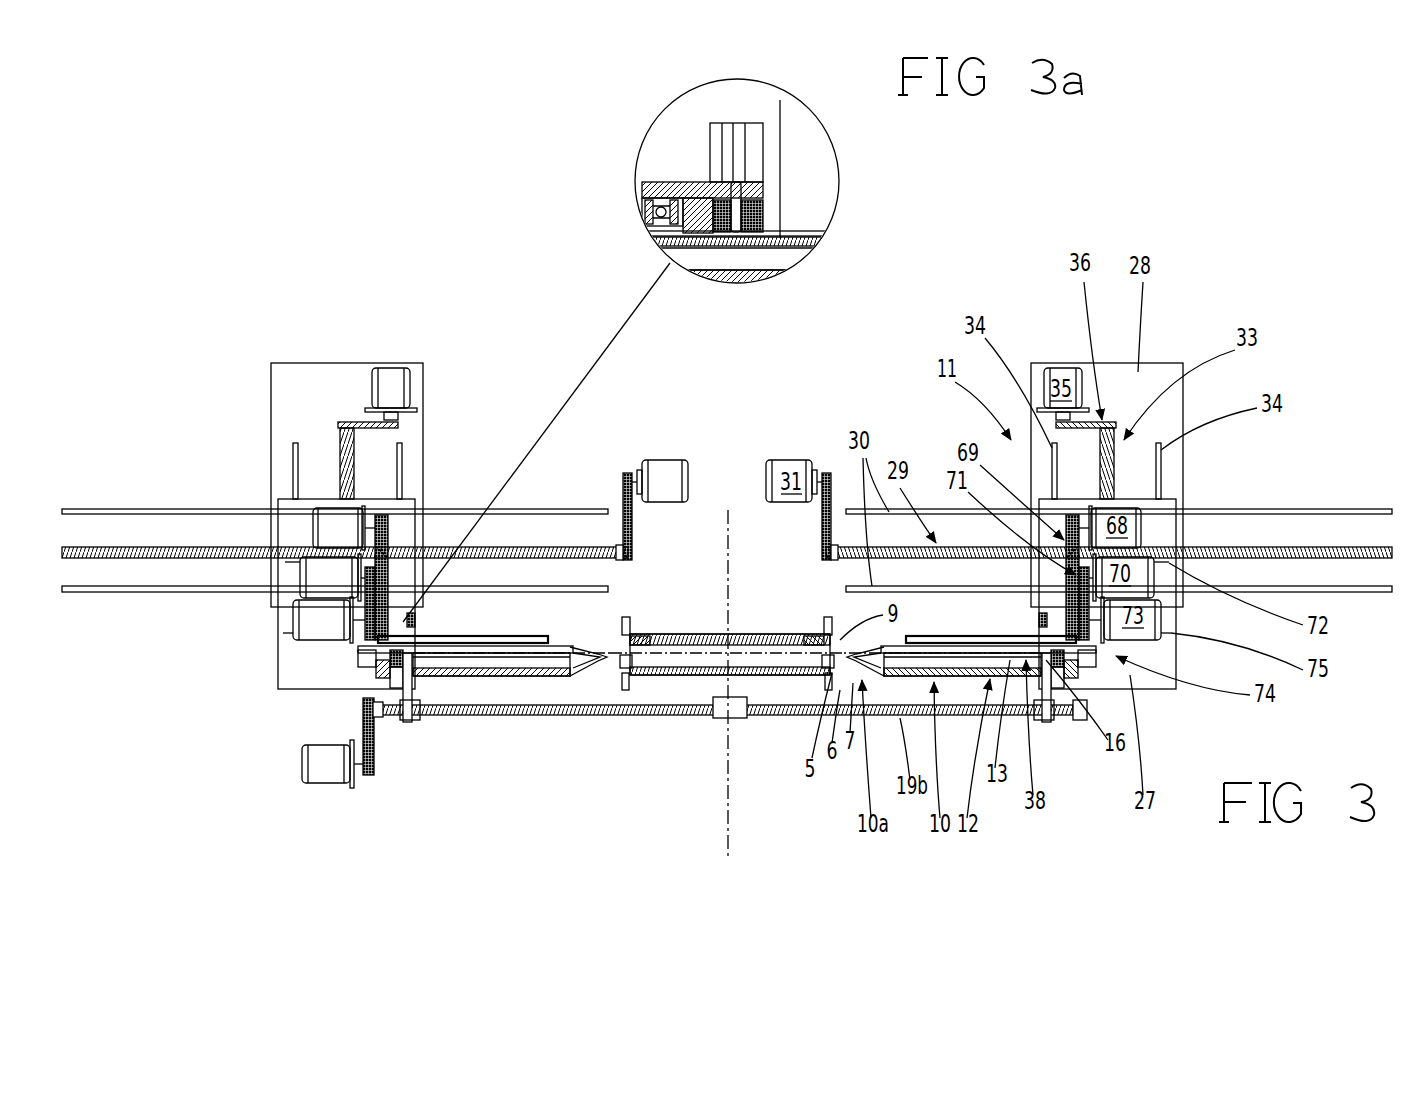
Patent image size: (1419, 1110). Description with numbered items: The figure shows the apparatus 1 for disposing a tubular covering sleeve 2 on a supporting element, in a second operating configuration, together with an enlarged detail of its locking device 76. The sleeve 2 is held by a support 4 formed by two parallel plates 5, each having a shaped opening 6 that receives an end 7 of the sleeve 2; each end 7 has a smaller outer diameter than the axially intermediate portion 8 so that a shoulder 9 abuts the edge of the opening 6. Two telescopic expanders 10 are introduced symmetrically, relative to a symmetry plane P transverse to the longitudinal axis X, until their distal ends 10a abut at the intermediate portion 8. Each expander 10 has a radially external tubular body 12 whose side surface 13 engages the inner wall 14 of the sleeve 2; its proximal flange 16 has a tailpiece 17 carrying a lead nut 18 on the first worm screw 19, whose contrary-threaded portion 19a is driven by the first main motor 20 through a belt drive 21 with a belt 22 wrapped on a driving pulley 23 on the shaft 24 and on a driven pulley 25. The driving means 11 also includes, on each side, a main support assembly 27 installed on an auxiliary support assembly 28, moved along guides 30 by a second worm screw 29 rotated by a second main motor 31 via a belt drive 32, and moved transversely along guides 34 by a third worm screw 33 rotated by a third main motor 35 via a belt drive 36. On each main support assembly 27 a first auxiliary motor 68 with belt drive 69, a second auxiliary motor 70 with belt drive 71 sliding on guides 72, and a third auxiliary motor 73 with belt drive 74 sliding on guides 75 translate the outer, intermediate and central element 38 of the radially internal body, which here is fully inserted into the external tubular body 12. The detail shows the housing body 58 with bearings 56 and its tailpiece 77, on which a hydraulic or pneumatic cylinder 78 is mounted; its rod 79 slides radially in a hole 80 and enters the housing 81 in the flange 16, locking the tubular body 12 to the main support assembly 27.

In FIG. 3, the apparatus 1 is at (864, 352).
In FIG. 3, the tubular covering sleeve 2 is at (760, 630).
In FIG. 3, the support 4 is at (642, 618).
In FIG. 3, the plates 5 is at (641, 674).
In FIG. 3, the shaped opening 6 is at (626, 674).
In FIG. 3, the end of sleeve 7 is at (620, 656).
In FIG. 3, the axially intermediate portion 8 is at (780, 675).
In FIG. 3, the shoulder 9 is at (620, 640).
In FIG. 3, the expanders 10 is at (522, 682).
In FIG. 3, the distal ends of expanders 10a is at (592, 680).
In FIG. 3, the driving means 11 is at (443, 440).
In FIG. 3, the radially external tubular body 12 is at (464, 679).
In FIG. 3, the side surface 13 is at (488, 660).
In FIG. 3, the inner wall 14 is at (747, 655).
In FIG. 3, the flange 16 is at (412, 660).
In FIG. 3A, the flange 16 is at (765, 218).
In FIG. 3, the tailpiece 17 is at (395, 690).
In FIG. 3, the lead nut 18 is at (409, 724).
In FIG. 3, the first worm screw 19 is at (662, 720).
In FIG. 3, the first portion of first worm screw 19a is at (683, 718).
In FIG. 3, the first main motor 20 is at (316, 776).
In FIG. 3, the belt drive 21 is at (352, 730).
In FIG. 3, the belt 22 is at (375, 745).
In FIG. 3, the driving pulley 23 is at (368, 776).
In FIG. 3, the shaft 24 is at (357, 782).
In FIG. 3, the driven pulley 25 is at (360, 705).
In FIG. 3, the main support assembly 27 is at (288, 512).
In FIG. 3, the auxiliary support assembly 28 is at (316, 372).
In FIG. 3, the second worm screw 29 is at (518, 543).
In FIG. 3, the parallel guides 30 is at (582, 586).
In FIG. 3, the second main motor 31 is at (676, 494).
In FIG. 3, the belt drive 32 is at (816, 524).
In FIG. 3, the third worm screw 33 is at (330, 440).
In FIG. 3, the guides 34 is at (293, 450).
In FIG. 3, the third main motor 35 is at (380, 401).
In FIG. 3, the belt drive 36 is at (352, 420).
In FIG. 3, the central element 38 is at (553, 660).
In FIG. 3A, the bearings 56 is at (645, 226).
In FIG. 3A, the housing body 58 is at (655, 177).
In FIG. 3, the first auxiliary motor 68 is at (327, 538).
In FIG. 3, the belt drive 69 is at (390, 540).
In FIG. 3, the second auxiliary motor 70 is at (324, 586).
In FIG. 3, the belt drive 71 is at (378, 575).
In FIG. 3, the guides 72 is at (285, 563).
In FIG. 3, the third auxiliary motor 73 is at (311, 628).
In FIG. 3, the belt drive 74 is at (338, 656).
In FIG. 3, the guides 75 is at (283, 633).
In FIG. 3, the locking device 76 is at (418, 620).
In FIG. 3A, the locking device 76 is at (768, 111).
In FIG. 3A, the tailpiece of housing body 77 is at (700, 190).
In FIG. 3A, the hydraulic or pneumatic cylinder 78 is at (737, 140).
In FIG. 3A, the rod 79 is at (748, 196).
In FIG. 3A, the hole 80 is at (742, 184).
In FIG. 3A, the housing 81 is at (740, 245).
In FIG. 3, the longitudinal axis X is at (713, 788).
In FIG. 3, the symmetry plane P is at (733, 818).